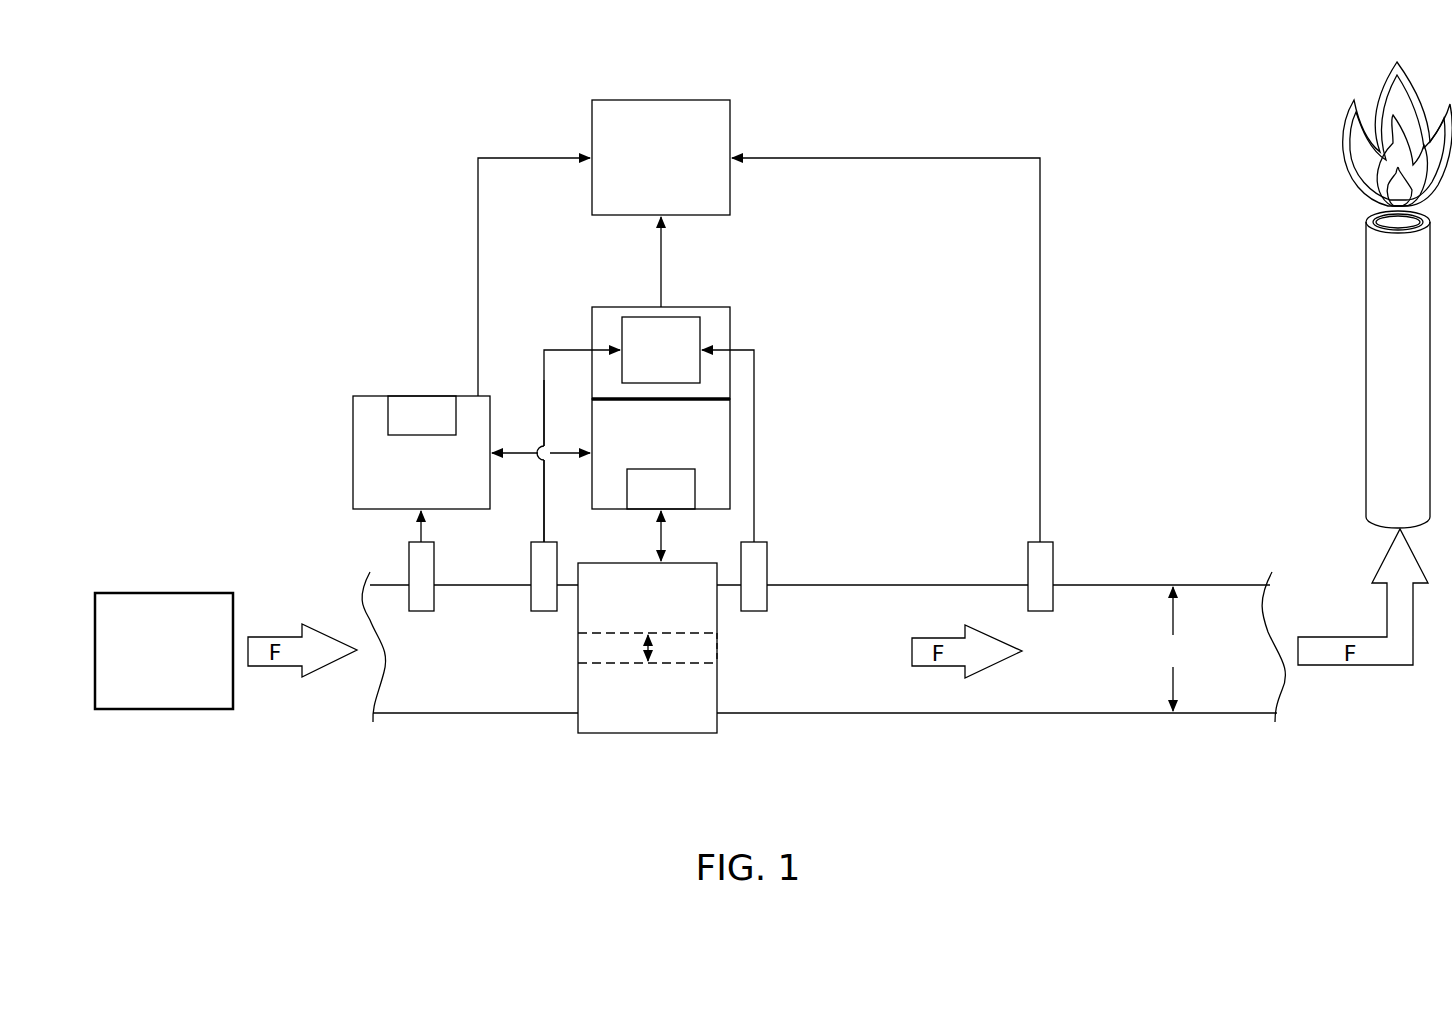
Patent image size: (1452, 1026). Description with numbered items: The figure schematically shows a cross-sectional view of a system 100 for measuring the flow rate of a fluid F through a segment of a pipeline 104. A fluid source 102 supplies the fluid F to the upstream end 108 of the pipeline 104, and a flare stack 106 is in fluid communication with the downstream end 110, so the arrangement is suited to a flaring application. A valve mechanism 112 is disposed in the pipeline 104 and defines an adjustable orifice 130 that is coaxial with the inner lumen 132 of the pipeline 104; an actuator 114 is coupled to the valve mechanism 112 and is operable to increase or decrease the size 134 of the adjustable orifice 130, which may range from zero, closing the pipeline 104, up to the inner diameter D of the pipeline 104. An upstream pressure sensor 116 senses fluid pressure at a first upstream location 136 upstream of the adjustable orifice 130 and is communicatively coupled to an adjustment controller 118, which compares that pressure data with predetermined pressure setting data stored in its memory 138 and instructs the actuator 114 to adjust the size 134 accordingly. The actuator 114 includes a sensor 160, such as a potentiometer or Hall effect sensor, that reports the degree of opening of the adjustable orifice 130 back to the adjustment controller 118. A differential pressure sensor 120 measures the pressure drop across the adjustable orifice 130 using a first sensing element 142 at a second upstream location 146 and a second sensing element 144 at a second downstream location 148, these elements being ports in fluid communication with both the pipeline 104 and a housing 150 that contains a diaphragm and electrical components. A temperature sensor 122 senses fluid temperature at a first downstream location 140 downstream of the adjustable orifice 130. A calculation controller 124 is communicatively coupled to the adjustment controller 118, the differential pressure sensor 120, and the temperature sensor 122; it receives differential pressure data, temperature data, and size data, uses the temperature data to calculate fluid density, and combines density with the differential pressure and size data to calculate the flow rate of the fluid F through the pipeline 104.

The system 100 is at (247, 146).
The fluid source 102 is at (142, 659).
The pipeline 104 is at (988, 713).
The flare stack 106 is at (1365, 322).
The upstream end 108 is at (375, 730).
The downstream end 110 is at (1205, 730).
The valve mechanism 112 is at (645, 735).
The actuator 114 is at (639, 456).
The upstream pressure sensor 116 is at (410, 566).
The adjustment controller 118 is at (400, 480).
The differential pressure sensor 120 is at (639, 366).
The temperature sensor 122 is at (1052, 566).
The calculation controller 124 is at (639, 174).
The adjustable orifice 130 is at (584, 648).
The inner lumen 132 is at (1219, 704).
The size 134 is at (652, 650).
The first upstream location 136 is at (373, 620).
The memory 138 is at (400, 430).
The first downstream location 140 is at (1078, 650).
The first sensing element 142 is at (532, 566).
The second sensing element 144 is at (765, 566).
The second upstream location 146 is at (521, 652).
The second downstream location 148 is at (774, 650).
The housing 150 is at (731, 312).
The sensor 160 is at (639, 507).